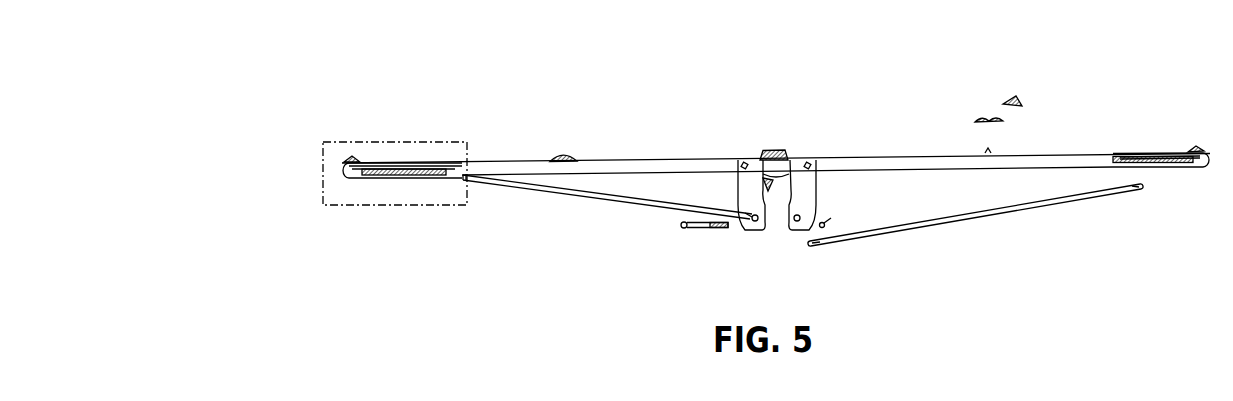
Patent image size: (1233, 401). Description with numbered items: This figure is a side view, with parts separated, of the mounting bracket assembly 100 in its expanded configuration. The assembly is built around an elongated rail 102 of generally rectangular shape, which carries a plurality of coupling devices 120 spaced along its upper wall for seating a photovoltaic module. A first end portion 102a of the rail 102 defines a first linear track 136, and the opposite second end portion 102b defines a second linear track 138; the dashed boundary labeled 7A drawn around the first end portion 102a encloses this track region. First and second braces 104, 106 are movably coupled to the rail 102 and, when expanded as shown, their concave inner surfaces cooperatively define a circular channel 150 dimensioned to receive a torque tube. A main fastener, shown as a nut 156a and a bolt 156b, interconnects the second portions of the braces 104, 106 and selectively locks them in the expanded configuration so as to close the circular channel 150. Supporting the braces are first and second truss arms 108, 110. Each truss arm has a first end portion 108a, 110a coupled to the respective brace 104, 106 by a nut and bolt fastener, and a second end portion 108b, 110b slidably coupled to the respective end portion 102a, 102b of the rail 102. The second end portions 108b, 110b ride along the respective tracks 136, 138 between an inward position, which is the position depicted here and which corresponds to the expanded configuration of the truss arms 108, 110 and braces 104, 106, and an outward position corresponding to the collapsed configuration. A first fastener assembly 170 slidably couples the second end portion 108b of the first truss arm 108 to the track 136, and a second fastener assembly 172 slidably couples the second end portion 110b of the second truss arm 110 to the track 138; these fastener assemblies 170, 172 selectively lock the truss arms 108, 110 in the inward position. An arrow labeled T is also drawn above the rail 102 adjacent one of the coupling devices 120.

The mounting bracket assembly 100 is at (268, 60).
The detail view region 7A is at (342, 141).
The elongated rail 102 is at (884, 156).
The first end portion of the rail 102a is at (413, 162).
The second end portion of the rail 102b is at (1150, 156).
The first brace 104 is at (736, 181).
The second brace 106 is at (818, 176).
The first truss arm 108 is at (597, 204).
The first end portion of the first truss arm 108a is at (741, 224).
The second end portion of the first truss arm 108b is at (482, 181).
The second truss arm 110 is at (1010, 214).
The first end portion of the second truss arm 110a is at (855, 243).
The second end portion of the second truss arm 110b is at (1129, 194).
The coupling device 120 is at (565, 153).
The first linear track 136 is at (393, 180).
The second linear track 138 is at (1173, 168).
The circular channel 150 is at (762, 151).
The nut 156a is at (826, 222).
The bolt 156b is at (690, 229).
The first fastener assembly 170 is at (446, 167).
The second fastener assembly 172 is at (1115, 156).
The tension direction T is at (984, 115).